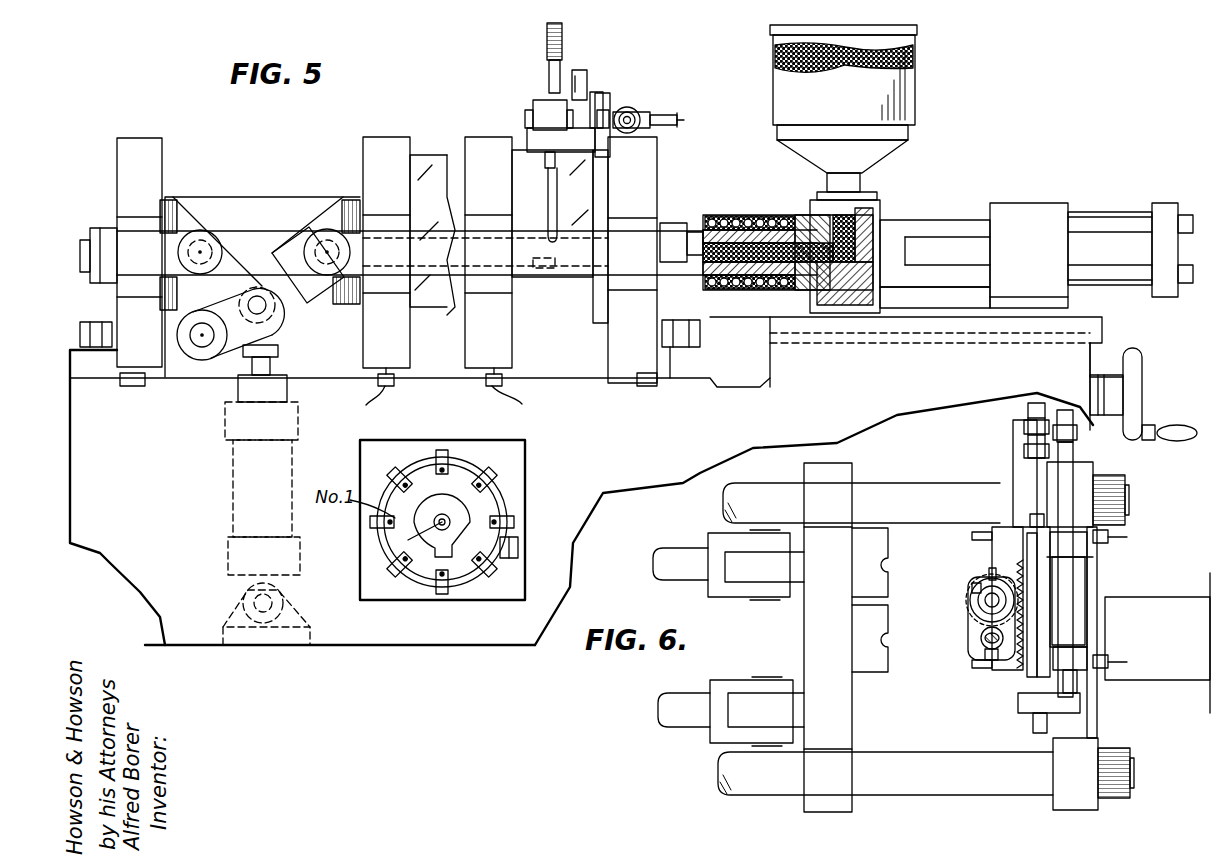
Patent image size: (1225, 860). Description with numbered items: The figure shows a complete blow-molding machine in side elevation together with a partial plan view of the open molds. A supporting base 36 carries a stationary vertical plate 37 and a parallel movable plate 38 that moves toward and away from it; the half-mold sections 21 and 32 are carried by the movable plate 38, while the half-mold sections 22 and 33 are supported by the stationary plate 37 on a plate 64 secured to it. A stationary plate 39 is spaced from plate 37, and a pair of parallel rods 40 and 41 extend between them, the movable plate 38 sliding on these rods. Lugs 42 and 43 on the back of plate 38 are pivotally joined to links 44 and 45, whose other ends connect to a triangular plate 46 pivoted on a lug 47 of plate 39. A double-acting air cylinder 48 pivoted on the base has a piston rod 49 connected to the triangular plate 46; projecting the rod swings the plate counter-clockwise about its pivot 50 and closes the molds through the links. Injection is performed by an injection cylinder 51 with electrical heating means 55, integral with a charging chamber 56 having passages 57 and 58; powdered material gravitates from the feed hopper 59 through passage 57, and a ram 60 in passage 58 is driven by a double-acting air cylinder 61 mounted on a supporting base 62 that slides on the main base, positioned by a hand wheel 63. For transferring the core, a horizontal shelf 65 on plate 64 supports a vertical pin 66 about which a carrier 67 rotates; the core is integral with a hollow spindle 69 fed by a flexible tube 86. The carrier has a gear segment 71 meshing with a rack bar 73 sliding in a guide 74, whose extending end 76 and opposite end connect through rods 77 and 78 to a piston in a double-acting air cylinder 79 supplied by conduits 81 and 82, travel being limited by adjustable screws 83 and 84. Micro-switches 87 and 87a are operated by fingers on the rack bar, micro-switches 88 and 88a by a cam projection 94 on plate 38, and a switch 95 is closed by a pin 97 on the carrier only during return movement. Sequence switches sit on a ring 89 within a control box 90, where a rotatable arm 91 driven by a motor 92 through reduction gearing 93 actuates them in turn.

In FIG. 5, the half-mold section 21 is at (418, 155).
In FIG. 6, the half-mold section 21 is at (880, 665).
In FIG. 5, the half-mold section 22 is at (578, 282).
In FIG. 6, the half-mold section 22 is at (1008, 668).
In FIG. 6, the half-mold section 32 is at (866, 525).
In FIG. 6, the half-mold section 33 is at (995, 528).
In FIG. 5, the supporting base 36 is at (667, 425).
In FIG. 5, the stationary vertical plate 37 is at (657, 153).
In FIG. 6, the stationary vertical plate 37 is at (1097, 717).
In FIG. 5, the movable plate 38 is at (372, 140).
In FIG. 6, the movable plate 38 is at (812, 631).
In FIG. 5, the stationary plate 39 is at (117, 152).
In FIG. 5, the rod 40 is at (266, 240).
In FIG. 6, the rod 40 is at (778, 775).
In FIG. 6, the rod 41 is at (742, 496).
In FIG. 6, the lug 42 is at (752, 705).
In FIG. 6, the lug 43 is at (755, 572).
In FIG. 6, the link 44 is at (688, 718).
In FIG. 6, the link 45 is at (672, 549).
In FIG. 5, the triangular plate 46 is at (225, 355).
In FIG. 5, the lug 47 is at (180, 198).
In FIG. 5, the double-acting air cylinder 48 is at (233, 488).
In FIG. 5, the piston rod 49 is at (278, 358).
In FIG. 5, the pivot 50 is at (200, 240).
In FIG. 5, the injection cylinder 51 is at (725, 213).
In FIG. 6, the injection cylinder 51 is at (1158, 642).
In FIG. 5, the electrical heating means 55 is at (750, 292).
In FIG. 5, the charging chamber 56 is at (880, 203).
In FIG. 5, the passage 57 is at (810, 217).
In FIG. 5, the passage 58 is at (812, 267).
In FIG. 5, the feed hopper 59 is at (915, 80).
In FIG. 5, the ram 60 is at (845, 268).
In FIG. 5, the double-acting air cylinder 61 is at (1097, 212).
In FIG. 5, the supporting base 62 is at (972, 312).
In FIG. 5, the hand wheel 63 is at (1142, 372).
In FIG. 5, the plate 64 is at (600, 325).
In FIG. 6, the plate 64 is at (1045, 610).
In FIG. 5, the horizontal shelf 65 is at (530, 138).
In FIG. 6, the vertical pin 66 is at (975, 598).
In FIG. 5, the carrier 67 is at (538, 104).
In FIG. 6, the carrier 67 is at (970, 622).
In FIG. 5, the hollow spindle 69 is at (548, 150).
In FIG. 6, the hollow spindle 69 is at (982, 641).
In FIG. 5, the gear segment 71 is at (526, 116).
In FIG. 6, the gear segment 71 is at (978, 590).
In FIG. 6, the rack bar 73 is at (1013, 455).
In FIG. 6, the guide 74 is at (1012, 542).
In FIG. 5, the extending end 76 is at (612, 135).
In FIG. 6, the rod 77 is at (1073, 452).
In FIG. 5, the rod 78 is at (648, 114).
In FIG. 6, the rod 78 is at (1080, 683).
In FIG. 5, the double-acting air cylinder 79 is at (634, 110).
In FIG. 6, the double-acting air cylinder 79 is at (1075, 576).
In FIG. 6, the conduit 81 is at (1125, 538).
In FIG. 5, the conduit 82 is at (680, 124).
In FIG. 6, the conduit 82 is at (1127, 662).
In FIG. 6, the adjustable screw 83 is at (1028, 412).
In FIG. 5, the adjustable screw 84 is at (605, 110).
In FIG. 6, the adjustable screw 84 is at (1038, 725).
In FIG. 5, the flexible tube 86 is at (546, 35).
In FIG. 6, the flexible tube 86 is at (985, 650).
In FIG. 6, the micro-switch 87 is at (1035, 698).
In FIG. 6, the micro-switch 87a is at (1032, 516).
In FIG. 5, the micro-switch 88 is at (362, 403).
In FIG. 5, the micro-switch 88a is at (526, 402).
In FIG. 5, the ring 89 is at (476, 473).
In FIG. 5, the control box 90 is at (432, 443).
In FIG. 5, the rotatable arm 91 is at (385, 532).
In FIG. 5, the motor 92 is at (505, 560).
In FIG. 5, the reduction gearing 93 is at (432, 503).
In FIG. 5, the cam projection 94 is at (396, 380).
In FIG. 5, the switch 95 is at (580, 72).
In FIG. 6, the switch 95 is at (1037, 590).
In FIG. 6, the pin 97 is at (990, 577).